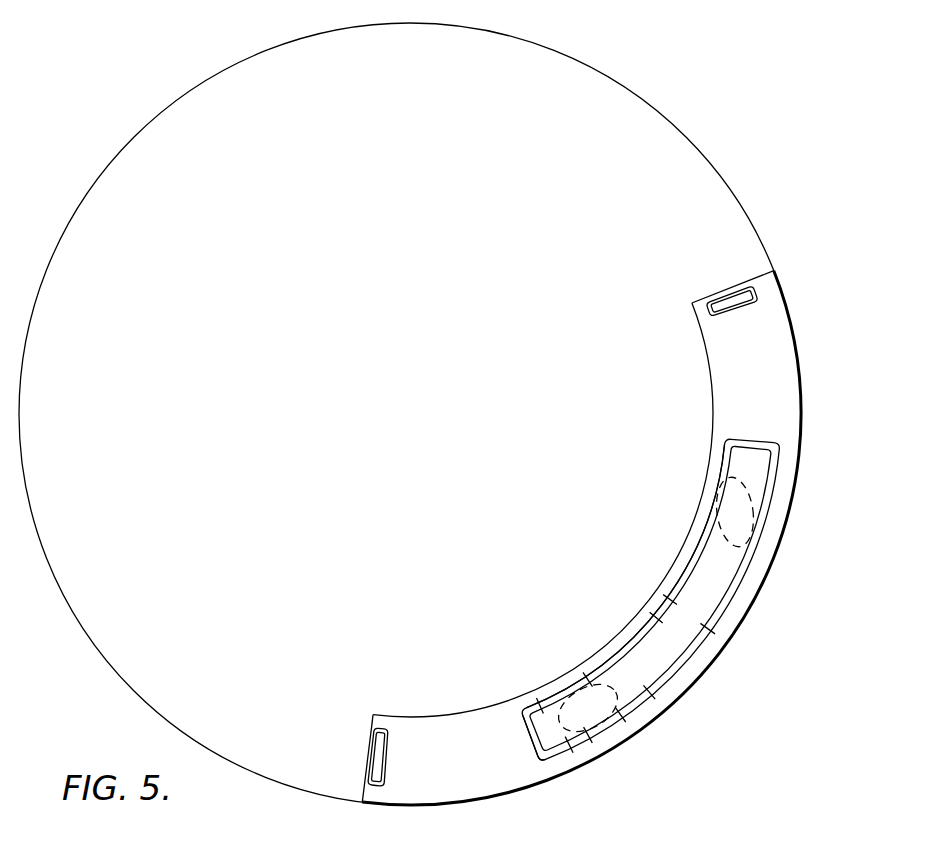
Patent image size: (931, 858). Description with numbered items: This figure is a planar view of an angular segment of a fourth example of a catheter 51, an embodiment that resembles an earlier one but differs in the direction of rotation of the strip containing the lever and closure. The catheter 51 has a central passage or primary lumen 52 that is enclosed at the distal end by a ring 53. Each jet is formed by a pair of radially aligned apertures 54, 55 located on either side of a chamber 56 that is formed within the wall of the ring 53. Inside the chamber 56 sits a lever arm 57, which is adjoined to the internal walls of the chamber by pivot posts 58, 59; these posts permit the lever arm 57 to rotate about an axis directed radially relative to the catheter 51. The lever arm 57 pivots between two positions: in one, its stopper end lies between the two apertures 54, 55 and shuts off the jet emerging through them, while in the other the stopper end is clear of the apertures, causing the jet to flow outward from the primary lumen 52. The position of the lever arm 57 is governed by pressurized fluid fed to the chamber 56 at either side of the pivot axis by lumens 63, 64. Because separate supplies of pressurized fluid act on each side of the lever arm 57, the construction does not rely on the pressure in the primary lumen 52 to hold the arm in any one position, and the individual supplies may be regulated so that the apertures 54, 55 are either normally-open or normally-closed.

The catheter 51 is at (771, 178).
The primary lumen 52 is at (411, 407).
The ring 53 is at (768, 375).
The aperture 54 is at (569, 680).
The aperture 55 is at (600, 751).
The chamber 56 is at (650, 704).
The lever arm 57 is at (716, 586).
The pivot post 58 is at (662, 596).
The pivot post 59 is at (706, 628).
The lumen 63 is at (750, 500).
The lumen 64 is at (652, 735).